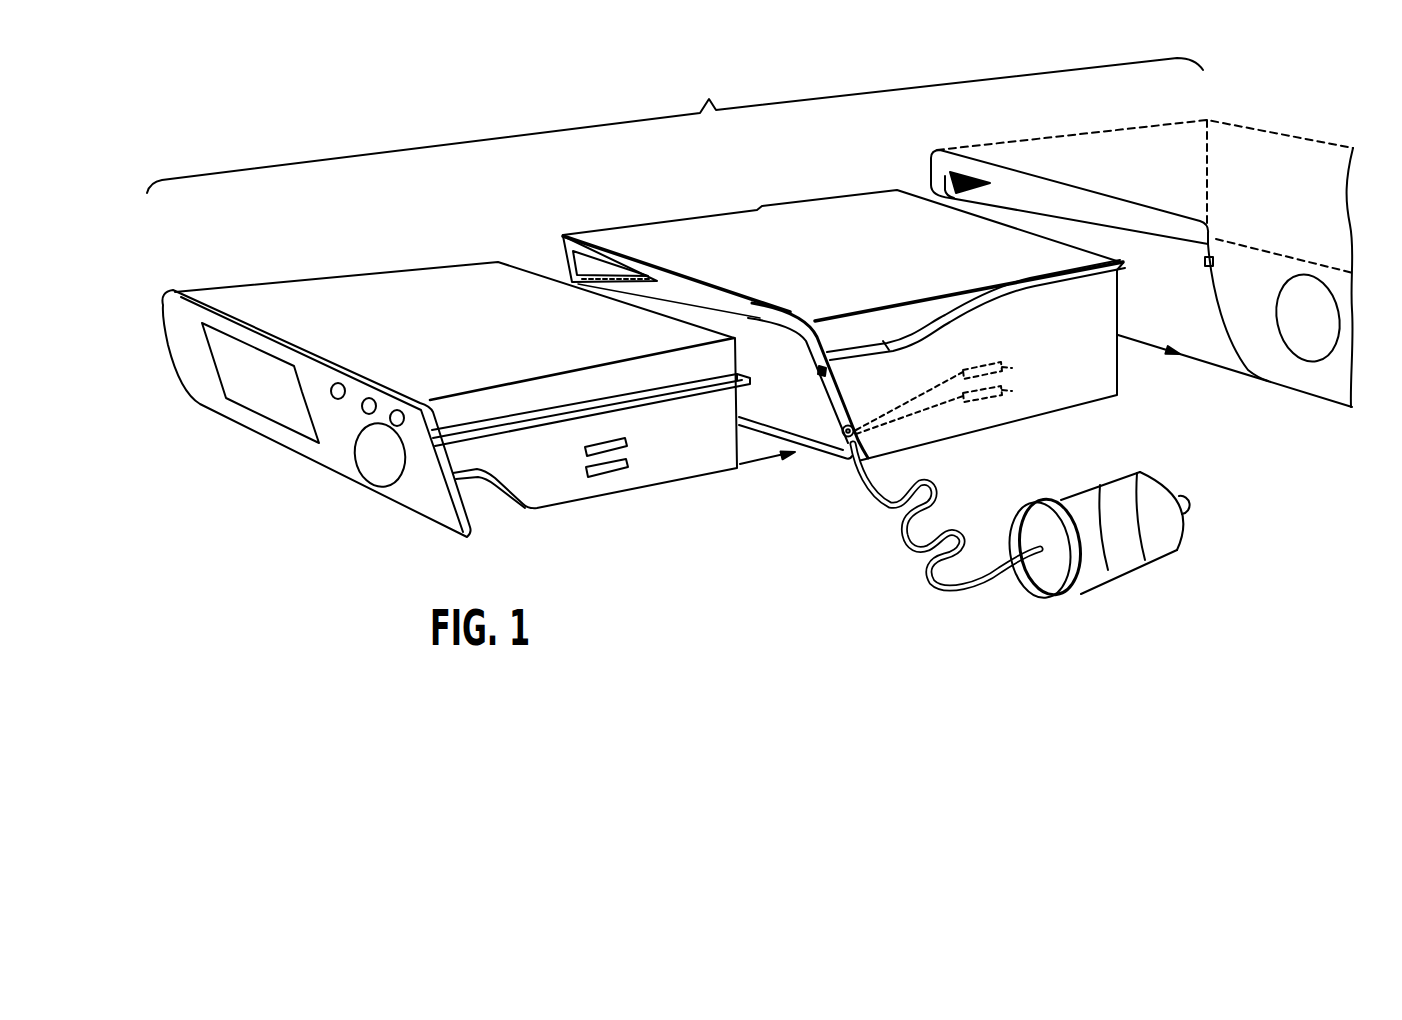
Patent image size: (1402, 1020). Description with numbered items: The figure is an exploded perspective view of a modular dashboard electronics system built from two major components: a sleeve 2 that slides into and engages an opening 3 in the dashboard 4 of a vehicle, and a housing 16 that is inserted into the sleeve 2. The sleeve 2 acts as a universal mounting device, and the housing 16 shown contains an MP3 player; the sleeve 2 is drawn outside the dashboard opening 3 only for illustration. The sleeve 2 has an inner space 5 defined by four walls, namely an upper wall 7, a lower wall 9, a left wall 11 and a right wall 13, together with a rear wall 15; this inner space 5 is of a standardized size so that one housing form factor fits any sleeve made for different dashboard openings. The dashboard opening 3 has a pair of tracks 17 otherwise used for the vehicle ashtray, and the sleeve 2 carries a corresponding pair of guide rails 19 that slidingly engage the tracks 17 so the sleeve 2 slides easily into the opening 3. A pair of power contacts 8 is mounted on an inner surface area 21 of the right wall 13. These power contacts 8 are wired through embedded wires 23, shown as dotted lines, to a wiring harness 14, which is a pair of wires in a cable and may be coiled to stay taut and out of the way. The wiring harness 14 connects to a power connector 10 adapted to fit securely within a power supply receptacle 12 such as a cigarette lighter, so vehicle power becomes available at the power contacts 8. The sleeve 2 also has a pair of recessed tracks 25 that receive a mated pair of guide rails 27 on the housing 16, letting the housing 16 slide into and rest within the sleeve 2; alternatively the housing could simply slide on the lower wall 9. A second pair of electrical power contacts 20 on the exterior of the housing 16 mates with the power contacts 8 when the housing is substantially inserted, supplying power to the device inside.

The sleeve 2 is at (688, 218).
The opening 3 is at (1062, 208).
The dashboard 4 is at (1264, 380).
The inner space 5 is at (812, 440).
The upper wall 7 is at (614, 232).
The power contacts 8 is at (1012, 376).
The lower wall 9 is at (828, 453).
The power connector 10 is at (1113, 577).
The left wall 11 is at (575, 270).
The power supply receptacle 12 is at (1313, 352).
The right wall 13 is at (993, 422).
The wiring harness 14 is at (905, 546).
The rear wall 15 is at (1118, 388).
The housing 16 is at (407, 280).
The tracks 17 is at (958, 190).
The guide rails 19 is at (988, 307).
The electrical power contacts 20 is at (627, 443).
The inner surface area 21 is at (800, 325).
The embedded wires 23 is at (935, 390).
The recessed tracks 25 is at (612, 270).
The guide rails 27 is at (660, 387).